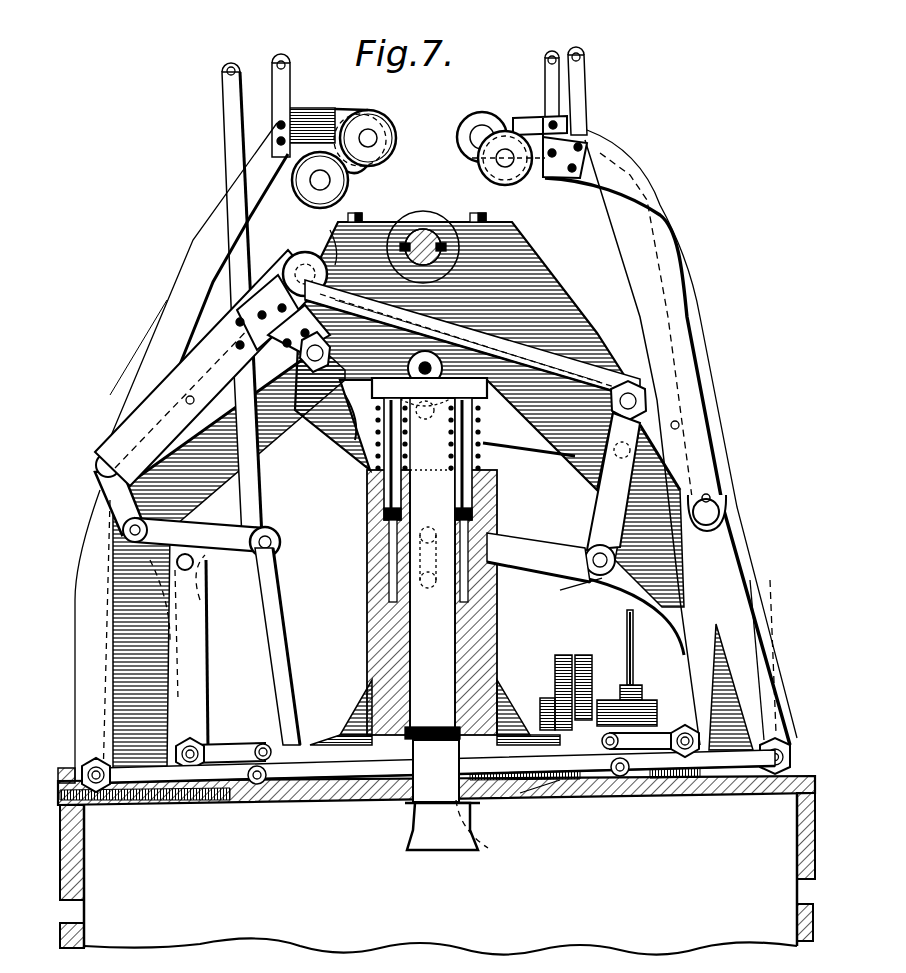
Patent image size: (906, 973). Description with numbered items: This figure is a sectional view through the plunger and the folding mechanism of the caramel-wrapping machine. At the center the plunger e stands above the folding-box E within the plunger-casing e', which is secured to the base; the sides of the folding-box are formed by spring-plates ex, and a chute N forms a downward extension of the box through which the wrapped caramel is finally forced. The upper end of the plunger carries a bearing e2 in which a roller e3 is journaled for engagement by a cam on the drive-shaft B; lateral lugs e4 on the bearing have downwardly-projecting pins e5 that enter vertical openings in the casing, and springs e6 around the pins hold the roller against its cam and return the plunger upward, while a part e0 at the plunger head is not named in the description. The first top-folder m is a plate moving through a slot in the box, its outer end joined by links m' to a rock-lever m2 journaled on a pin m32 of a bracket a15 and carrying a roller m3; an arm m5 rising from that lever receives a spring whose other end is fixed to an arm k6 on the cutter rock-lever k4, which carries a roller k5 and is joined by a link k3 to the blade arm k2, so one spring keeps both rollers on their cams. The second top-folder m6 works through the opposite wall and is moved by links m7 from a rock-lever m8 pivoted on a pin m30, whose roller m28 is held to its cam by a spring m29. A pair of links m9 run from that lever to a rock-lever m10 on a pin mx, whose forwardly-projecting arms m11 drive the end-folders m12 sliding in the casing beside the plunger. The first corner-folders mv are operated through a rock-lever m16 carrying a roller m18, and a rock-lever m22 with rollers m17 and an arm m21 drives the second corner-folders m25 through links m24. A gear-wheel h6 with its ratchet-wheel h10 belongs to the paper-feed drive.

The drive-shaft B is at (421, 238).
The folding-box E is at (436, 804).
The chute N is at (450, 838).
The bracket a15 is at (205, 432).
The plunger e is at (432, 566).
The plunger-casing e' is at (427, 602).
The plunger head e0 is at (408, 728).
The bearing e2 is at (440, 358).
The roller e3 is at (467, 337).
The lateral lugs e4 is at (552, 350).
The pins e5 is at (380, 493).
The springs e6 is at (377, 445).
The spring-plates ex is at (484, 832).
The gear-wheel h6 is at (562, 655).
The ratchet-wheel h10 is at (592, 662).
The arm k2 is at (283, 645).
The link k3 is at (240, 530).
The rock-lever k4 is at (122, 482).
The roller k5 is at (298, 262).
The arm k6 is at (232, 128).
The first top-folder m is at (435, 709).
The links m' is at (650, 721).
The rock-lever m2 is at (410, 572).
The roller m3 is at (492, 178).
The arm m5 is at (588, 95).
The second top-folder m6 is at (322, 703).
The links m7 is at (230, 745).
The rock-lever m8 is at (207, 368).
The links m9 is at (488, 360).
The rock-lever m10 is at (598, 500).
The forwardly-projecting arms m11 is at (545, 555).
The end-folders m12 is at (497, 700).
The rock-lever m16 is at (760, 655).
The rollers m17 is at (408, 98).
The roller m18 is at (486, 114).
The arm m21 is at (286, 78).
The rock-lever m22 is at (200, 256).
The links m24 is at (168, 805).
The second corner-folders m25 is at (306, 805).
The roller m28 is at (325, 236).
The spring m29 is at (104, 458).
The pin m30 is at (194, 568).
The pin m32 is at (716, 504).
The first corner-folders mv is at (542, 790).
The pin mx is at (600, 580).